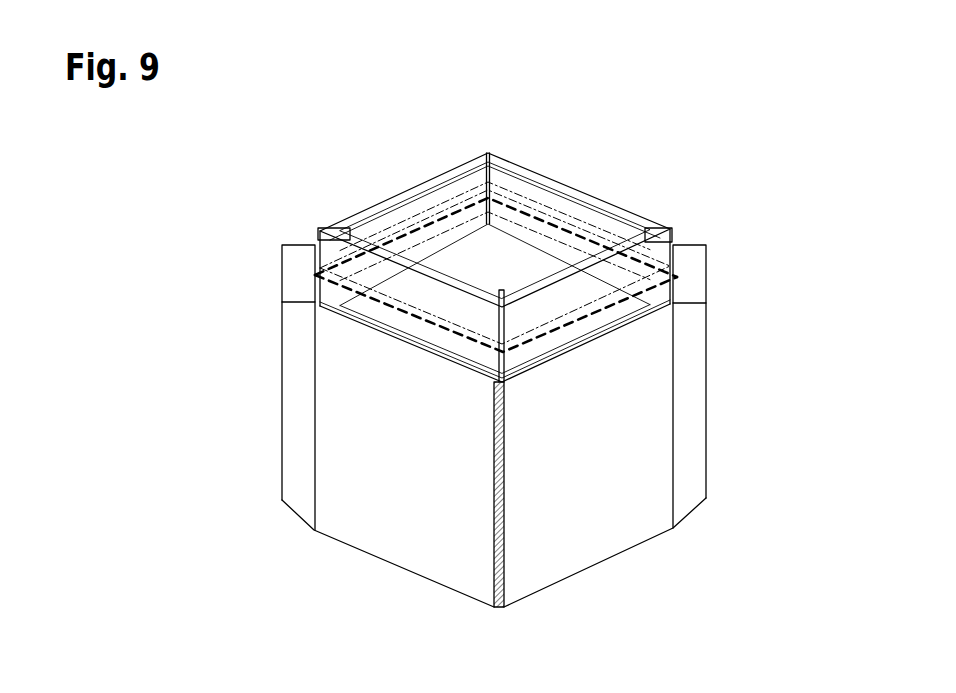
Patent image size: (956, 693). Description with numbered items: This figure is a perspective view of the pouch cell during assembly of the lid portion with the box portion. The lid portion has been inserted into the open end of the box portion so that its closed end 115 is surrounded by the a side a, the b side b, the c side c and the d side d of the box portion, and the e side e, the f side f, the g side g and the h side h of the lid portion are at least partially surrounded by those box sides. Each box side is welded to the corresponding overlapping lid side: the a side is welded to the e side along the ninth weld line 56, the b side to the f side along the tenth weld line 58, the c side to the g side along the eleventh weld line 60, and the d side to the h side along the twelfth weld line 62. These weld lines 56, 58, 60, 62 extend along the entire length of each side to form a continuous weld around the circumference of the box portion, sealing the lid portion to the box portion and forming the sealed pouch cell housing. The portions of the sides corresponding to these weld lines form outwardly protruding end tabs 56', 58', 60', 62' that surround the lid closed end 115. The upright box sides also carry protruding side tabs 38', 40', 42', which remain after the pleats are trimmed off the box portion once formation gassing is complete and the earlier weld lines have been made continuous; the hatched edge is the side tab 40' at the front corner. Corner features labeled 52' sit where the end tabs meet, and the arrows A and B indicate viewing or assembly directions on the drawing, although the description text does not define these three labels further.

The side tab 38' is at (337, 426).
The side tab 40' is at (479, 522).
The side tab 42' is at (650, 426).
The corner piece 52' is at (496, 226).
The ninth weld line 56 is at (495, 199).
The end tab 56' is at (495, 254).
The tenth weld line 58 is at (495, 184).
The end tab 58' is at (495, 191).
The eleventh weld line 60 is at (428, 278).
The end tab 60' is at (415, 302).
The twelfth weld line 62 is at (552, 313).
The end tab 62' is at (563, 229).
The closed end 115 is at (510, 273).
The a side a is at (577, 190).
The b side b is at (372, 210).
The c side c is at (412, 545).
The d side d is at (590, 543).
The e side e is at (552, 200).
The f side f is at (436, 184).
The g side g is at (397, 247).
The h side h is at (617, 260).
The direction A is at (672, 575).
The direction B is at (337, 577).